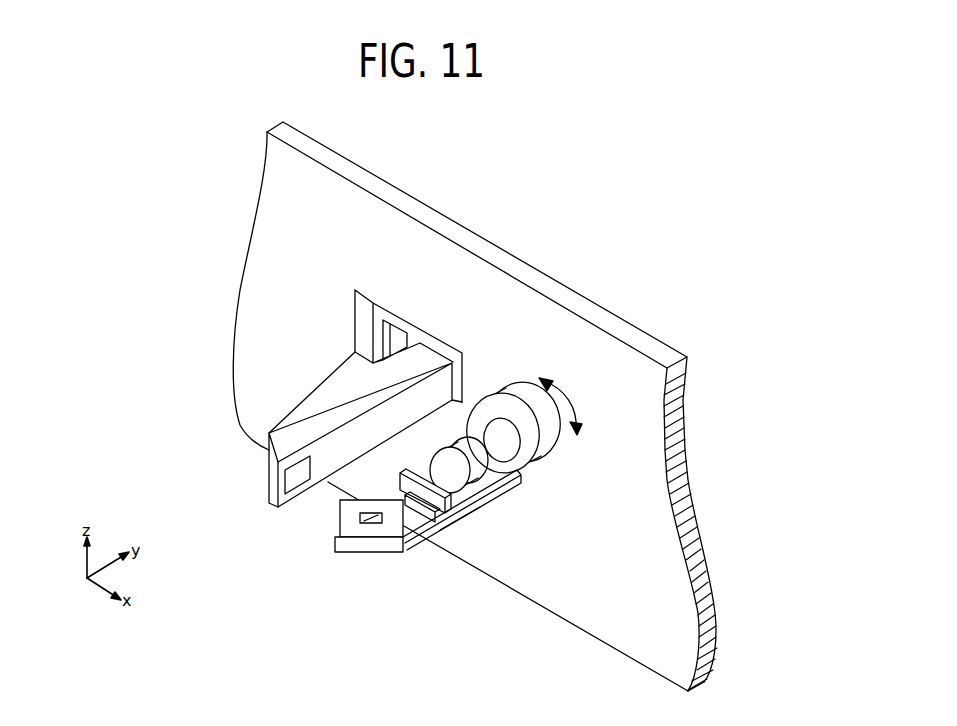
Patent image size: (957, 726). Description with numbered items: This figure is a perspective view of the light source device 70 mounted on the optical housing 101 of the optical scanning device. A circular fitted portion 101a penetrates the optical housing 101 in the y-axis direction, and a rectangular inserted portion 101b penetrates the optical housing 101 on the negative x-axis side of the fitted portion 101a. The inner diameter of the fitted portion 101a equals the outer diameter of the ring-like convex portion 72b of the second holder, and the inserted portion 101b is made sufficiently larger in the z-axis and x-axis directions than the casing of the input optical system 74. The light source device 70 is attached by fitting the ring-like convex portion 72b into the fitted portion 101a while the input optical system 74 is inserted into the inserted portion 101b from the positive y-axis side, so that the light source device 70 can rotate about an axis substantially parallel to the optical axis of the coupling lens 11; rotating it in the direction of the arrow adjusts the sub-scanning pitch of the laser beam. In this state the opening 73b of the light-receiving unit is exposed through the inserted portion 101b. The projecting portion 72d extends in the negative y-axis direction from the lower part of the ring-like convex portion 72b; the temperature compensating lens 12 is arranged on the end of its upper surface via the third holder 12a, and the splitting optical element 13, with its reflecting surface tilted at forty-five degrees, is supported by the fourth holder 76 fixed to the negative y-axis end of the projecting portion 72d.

The optical housing 101 is at (398, 197).
The fitted portion 101a is at (517, 391).
The inserted portion 101b is at (356, 331).
The opening 73b is at (393, 322).
The input optical system 74 is at (268, 468).
The light source device 70 is at (732, 272).
The ring-like convex portion 72b is at (553, 455).
The projecting portion 72d is at (461, 517).
The temperature compensating lens 12 is at (413, 480).
The third holder 12a is at (414, 512).
The coupling lens 11 is at (491, 501).
The splitting optical element 13 is at (346, 518).
The fourth holder 76 is at (368, 549).